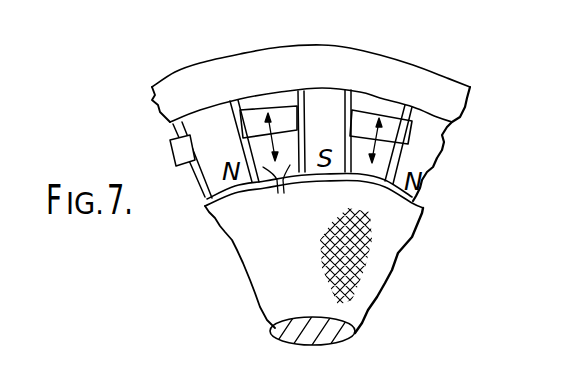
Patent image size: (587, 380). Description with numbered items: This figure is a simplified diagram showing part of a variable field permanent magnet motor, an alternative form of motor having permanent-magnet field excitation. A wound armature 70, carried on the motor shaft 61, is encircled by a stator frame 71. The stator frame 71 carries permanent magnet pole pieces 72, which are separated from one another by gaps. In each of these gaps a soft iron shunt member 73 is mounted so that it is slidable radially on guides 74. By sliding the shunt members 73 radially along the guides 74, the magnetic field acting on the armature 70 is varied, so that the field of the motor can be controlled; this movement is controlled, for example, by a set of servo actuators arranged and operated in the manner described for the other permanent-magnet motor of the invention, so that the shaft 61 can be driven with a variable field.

The motor shaft 61 is at (327, 337).
The wound armature 70 is at (310, 264).
The stator frame 71 is at (226, 95).
The permanent magnet pole pieces 72 is at (226, 142).
The soft iron shunt members 73 is at (373, 114).
The guides 74 is at (279, 194).